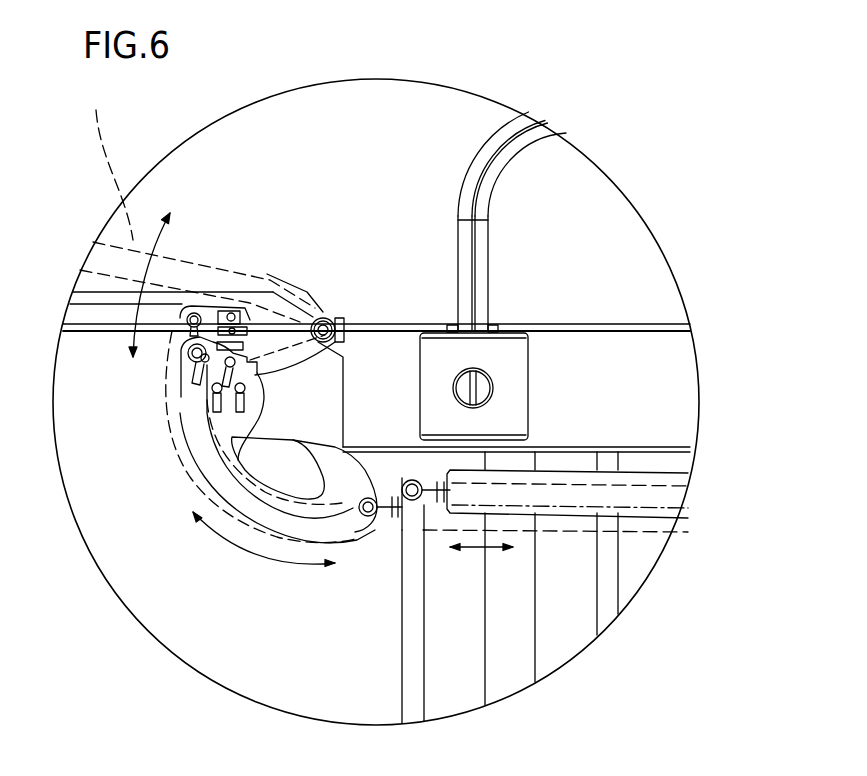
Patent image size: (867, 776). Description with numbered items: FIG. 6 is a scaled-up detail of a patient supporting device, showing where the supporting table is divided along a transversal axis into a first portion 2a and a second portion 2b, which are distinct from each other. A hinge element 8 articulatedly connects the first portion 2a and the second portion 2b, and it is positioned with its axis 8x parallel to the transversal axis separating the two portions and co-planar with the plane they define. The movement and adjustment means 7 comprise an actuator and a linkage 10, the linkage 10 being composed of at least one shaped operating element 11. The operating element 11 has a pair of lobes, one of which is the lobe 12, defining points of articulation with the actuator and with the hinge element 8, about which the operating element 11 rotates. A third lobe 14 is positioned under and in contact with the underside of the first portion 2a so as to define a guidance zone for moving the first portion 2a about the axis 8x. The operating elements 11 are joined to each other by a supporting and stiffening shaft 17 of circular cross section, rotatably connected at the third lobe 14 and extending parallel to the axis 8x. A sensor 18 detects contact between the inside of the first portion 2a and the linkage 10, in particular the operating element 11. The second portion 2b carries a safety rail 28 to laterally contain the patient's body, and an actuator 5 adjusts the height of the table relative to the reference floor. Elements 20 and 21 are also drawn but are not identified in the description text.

The first portion 2a is at (100, 292).
The second portion 2b is at (405, 327).
The actuator 5 is at (572, 599).
The movement and adjustment means 7 is at (390, 550).
The hinge element 8 is at (336, 316).
The axis of the hinge element 8x is at (327, 317).
The linkage 10 is at (305, 520).
The shaped operating element 11 is at (298, 410).
The lobe 12 is at (357, 540).
The third lobe 14 is at (180, 349).
The supporting and stiffening shaft 17 is at (191, 313).
The sensor 18 is at (232, 308).
The alternate position 20 is at (296, 411).
The links 21 is at (241, 405).
The safety rails 28 is at (540, 134).